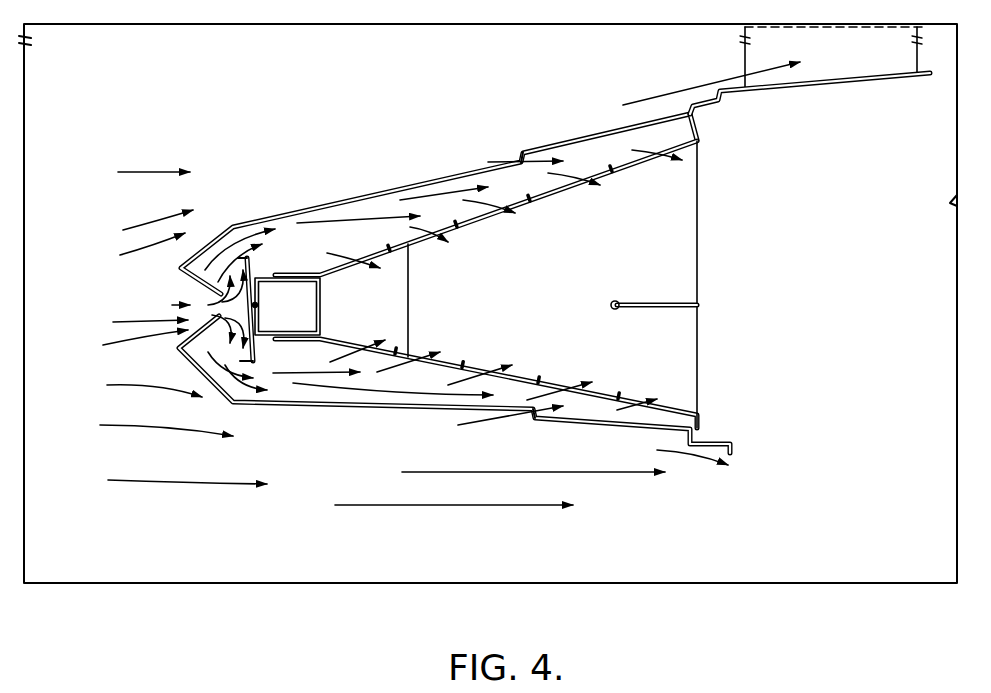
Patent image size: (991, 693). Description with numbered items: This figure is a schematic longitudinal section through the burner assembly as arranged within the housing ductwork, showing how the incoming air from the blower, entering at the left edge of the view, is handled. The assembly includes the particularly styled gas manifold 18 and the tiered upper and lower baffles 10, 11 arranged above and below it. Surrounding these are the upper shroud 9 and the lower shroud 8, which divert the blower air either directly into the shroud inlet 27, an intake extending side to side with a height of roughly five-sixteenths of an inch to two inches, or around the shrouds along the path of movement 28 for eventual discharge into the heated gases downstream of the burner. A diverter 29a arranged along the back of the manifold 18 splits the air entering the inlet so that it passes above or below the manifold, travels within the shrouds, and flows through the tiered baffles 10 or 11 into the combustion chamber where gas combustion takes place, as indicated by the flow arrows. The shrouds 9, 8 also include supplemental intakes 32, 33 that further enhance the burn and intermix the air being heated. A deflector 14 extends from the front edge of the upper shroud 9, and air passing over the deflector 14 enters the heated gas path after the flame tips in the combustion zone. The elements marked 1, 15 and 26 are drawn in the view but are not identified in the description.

The burner assembly 1 is at (413, 95).
The lower shroud 8 is at (393, 410).
The upper shroud 9 is at (288, 213).
The upper baffle 10 is at (560, 190).
The lower baffle 11 is at (560, 378).
The deflector 14 is at (808, 88).
The duct boundary 15 is at (765, 51).
The gas manifold 18 is at (320, 313).
The end plate 26 is at (697, 343).
The shroud inlet 27 is at (183, 308).
The path of movement 28 is at (512, 100).
The diverter 29a is at (256, 266).
The supplemental intake 32 is at (517, 158).
The supplemental intake 33 is at (535, 416).